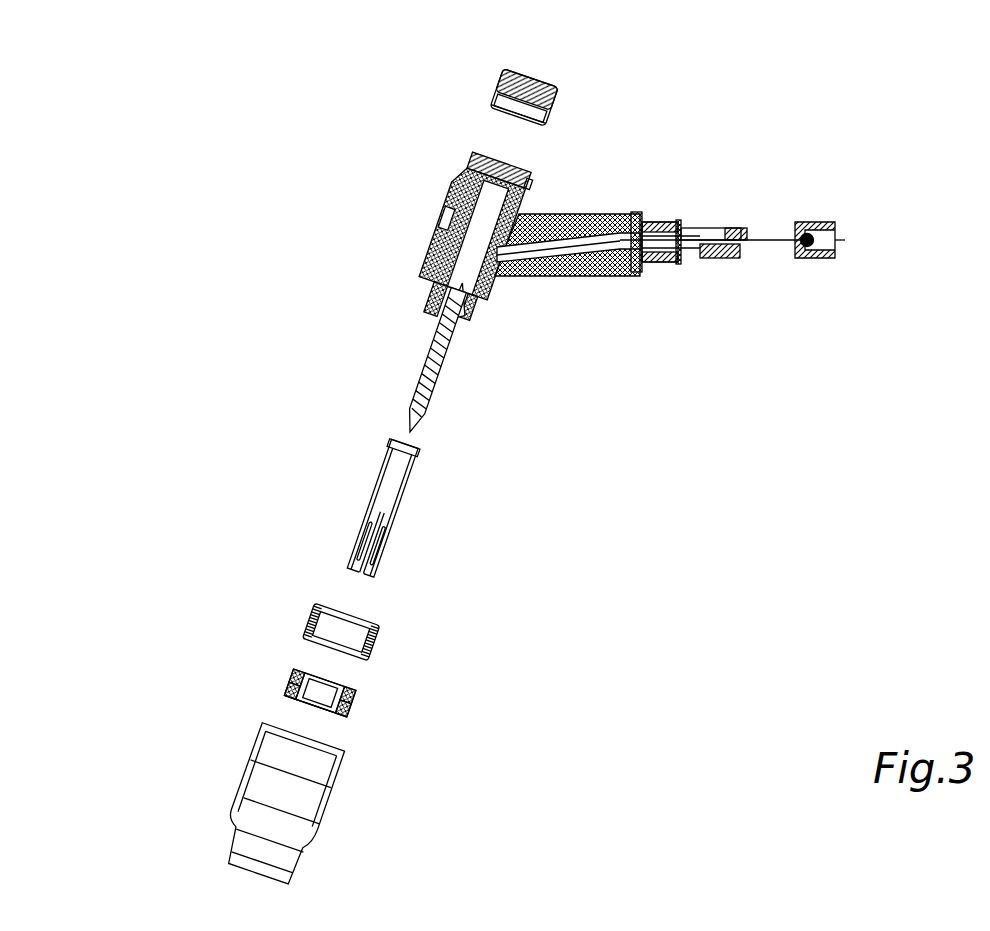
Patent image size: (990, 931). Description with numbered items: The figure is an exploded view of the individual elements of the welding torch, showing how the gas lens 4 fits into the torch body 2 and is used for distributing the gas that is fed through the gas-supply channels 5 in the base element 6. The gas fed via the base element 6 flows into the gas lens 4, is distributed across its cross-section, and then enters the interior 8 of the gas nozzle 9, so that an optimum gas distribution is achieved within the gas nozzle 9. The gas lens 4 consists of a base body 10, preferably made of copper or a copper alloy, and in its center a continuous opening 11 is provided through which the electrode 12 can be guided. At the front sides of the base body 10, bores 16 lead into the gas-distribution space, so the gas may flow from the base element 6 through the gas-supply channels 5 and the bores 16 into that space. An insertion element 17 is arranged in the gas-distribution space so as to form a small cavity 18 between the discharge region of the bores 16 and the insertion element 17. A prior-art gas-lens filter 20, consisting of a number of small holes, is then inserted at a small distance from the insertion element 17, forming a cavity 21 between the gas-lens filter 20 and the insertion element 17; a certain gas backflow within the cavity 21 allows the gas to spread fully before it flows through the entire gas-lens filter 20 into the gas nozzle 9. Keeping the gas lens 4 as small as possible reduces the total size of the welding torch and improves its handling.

The torch body 2 is at (702, 112).
The gas lens 4 is at (263, 669).
The gas-supply channels 5 is at (538, 272).
The base element 6 is at (540, 217).
The interior 8 is at (262, 780).
The gas nozzle 9 is at (322, 815).
The base body 10 is at (290, 675).
The continuous opening 11 is at (322, 685).
The electrode 12 is at (428, 377).
The bores 16 is at (285, 687).
The insertion element 17 is at (340, 710).
The cavity 18 is at (350, 703).
The gas-lens filter 20 is at (337, 713).
The cavity 21 is at (283, 695).